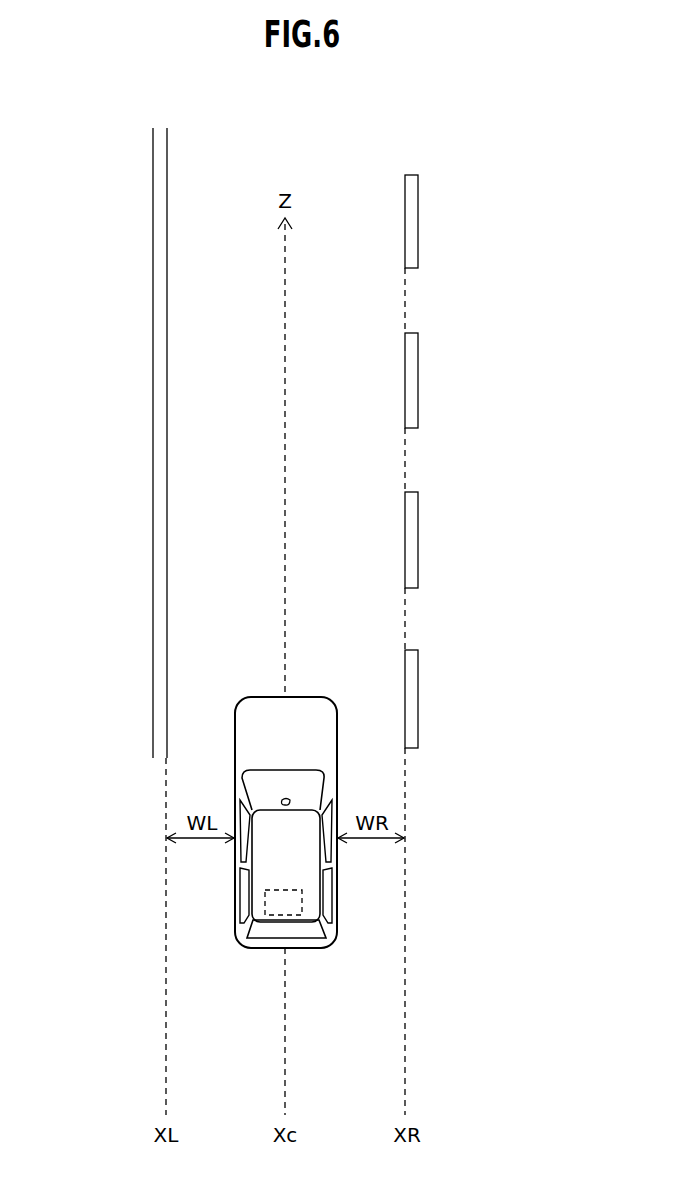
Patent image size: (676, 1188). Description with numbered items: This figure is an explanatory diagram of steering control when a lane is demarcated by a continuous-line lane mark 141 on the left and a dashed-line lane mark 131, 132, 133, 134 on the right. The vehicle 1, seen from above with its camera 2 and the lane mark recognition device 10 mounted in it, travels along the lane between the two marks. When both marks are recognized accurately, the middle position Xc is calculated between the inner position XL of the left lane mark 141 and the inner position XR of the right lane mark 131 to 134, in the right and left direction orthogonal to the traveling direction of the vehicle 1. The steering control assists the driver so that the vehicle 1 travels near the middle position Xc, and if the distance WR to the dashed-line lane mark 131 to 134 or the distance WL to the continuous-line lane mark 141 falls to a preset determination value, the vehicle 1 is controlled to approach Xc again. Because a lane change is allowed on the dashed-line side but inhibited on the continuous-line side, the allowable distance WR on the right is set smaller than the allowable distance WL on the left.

The vehicle 1 is at (304, 871).
The camera 2 is at (292, 800).
The lane mark recognition device 10 is at (262, 891).
The dashed-line lane mark 131 is at (407, 699).
The dashed-line lane mark 132 is at (407, 537).
The dashed-line lane mark 133 is at (407, 377).
The dashed-line lane mark 134 is at (407, 219).
The continuous-line lane mark 141 is at (153, 562).